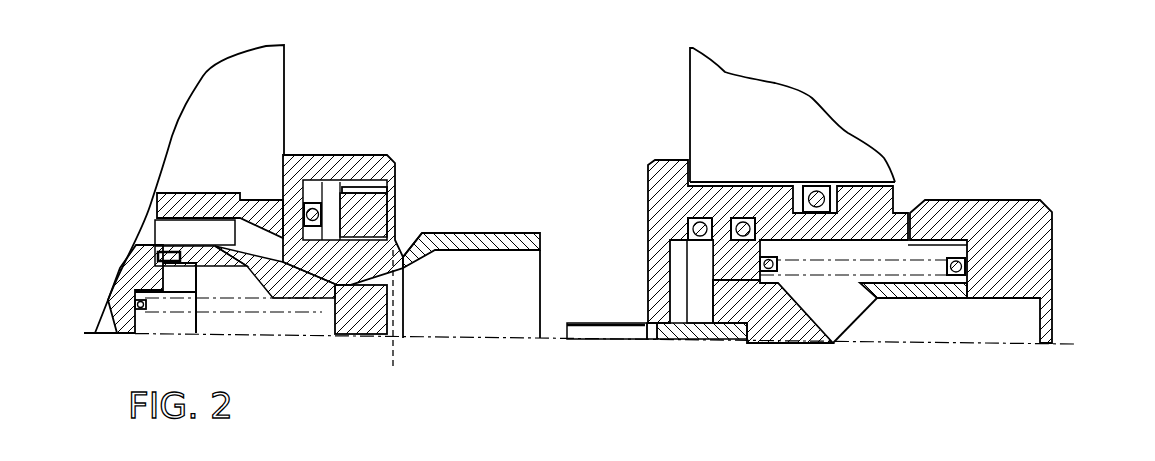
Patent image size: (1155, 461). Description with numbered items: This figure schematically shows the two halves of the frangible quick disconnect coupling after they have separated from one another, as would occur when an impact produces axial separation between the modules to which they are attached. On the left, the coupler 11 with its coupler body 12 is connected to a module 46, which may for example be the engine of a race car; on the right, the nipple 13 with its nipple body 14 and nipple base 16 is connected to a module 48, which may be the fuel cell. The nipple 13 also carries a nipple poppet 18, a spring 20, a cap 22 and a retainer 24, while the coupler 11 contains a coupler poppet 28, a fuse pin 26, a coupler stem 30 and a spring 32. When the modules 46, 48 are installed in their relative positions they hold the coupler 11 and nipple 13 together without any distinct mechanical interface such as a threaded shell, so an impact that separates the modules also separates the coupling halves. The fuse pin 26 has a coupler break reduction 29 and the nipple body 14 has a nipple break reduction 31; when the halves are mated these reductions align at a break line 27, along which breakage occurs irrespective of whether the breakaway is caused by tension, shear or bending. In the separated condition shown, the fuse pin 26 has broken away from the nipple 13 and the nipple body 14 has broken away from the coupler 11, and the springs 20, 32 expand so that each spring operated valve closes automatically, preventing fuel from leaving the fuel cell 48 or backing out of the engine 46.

The coupler 11 is at (832, 377).
The coupler body 12 is at (965, 202).
The nipple 13 is at (414, 368).
The nipple body 14 is at (417, 233).
The nipple base 16 is at (323, 155).
The nipple poppet 18 is at (298, 212).
The spring 20 is at (133, 305).
The cap 22 is at (160, 222).
The retainer 24 is at (358, 172).
The fuse pin 26 is at (585, 322).
The break line 27 is at (390, 347).
The coupler poppet 28 is at (910, 215).
The coupler break reduction 29 is at (645, 340).
The coupler stem 30 is at (1010, 282).
The nipple break reduction 31 is at (427, 250).
The spring 32 is at (907, 298).
The module 46 is at (287, 105).
The module 48 is at (688, 102).